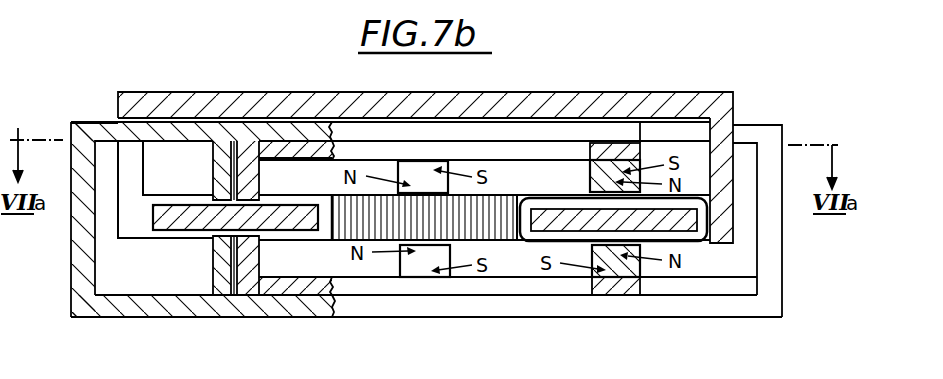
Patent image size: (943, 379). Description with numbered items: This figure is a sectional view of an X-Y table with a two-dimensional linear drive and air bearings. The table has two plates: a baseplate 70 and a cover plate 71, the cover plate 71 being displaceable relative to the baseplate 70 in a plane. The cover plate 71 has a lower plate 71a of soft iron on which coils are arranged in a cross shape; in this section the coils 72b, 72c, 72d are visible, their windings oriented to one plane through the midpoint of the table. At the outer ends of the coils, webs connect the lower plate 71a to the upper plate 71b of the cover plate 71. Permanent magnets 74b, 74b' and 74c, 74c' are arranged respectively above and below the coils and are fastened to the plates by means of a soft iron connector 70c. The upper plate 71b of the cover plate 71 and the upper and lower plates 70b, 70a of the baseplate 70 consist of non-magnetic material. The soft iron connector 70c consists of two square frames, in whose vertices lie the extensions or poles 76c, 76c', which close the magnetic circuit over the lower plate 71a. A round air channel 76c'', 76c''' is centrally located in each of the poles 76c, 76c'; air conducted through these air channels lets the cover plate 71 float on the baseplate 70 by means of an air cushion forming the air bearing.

The baseplate 70 is at (767, 250).
The lower plate of the baseplate 70a is at (750, 308).
The upper plate of the baseplate 70b is at (760, 128).
The soft iron connector 70c is at (250, 152).
The cover plate 71 is at (742, 97).
The lower plate of the cover plate 71a is at (502, 242).
The upper plate of the cover plate 71b is at (682, 105).
The coil 72b is at (692, 232).
The coil 72c is at (337, 223).
The coil 72d is at (163, 220).
The permanent magnet 74b is at (616, 126).
The permanent magnet 74b' is at (625, 304).
The permanent magnet 74c is at (422, 304).
The permanent magnet 74c' is at (454, 129).
The pole 76c is at (243, 299).
The pole 76c' is at (211, 128).
The air channel 76c'' is at (204, 170).
The air channel 76c''' is at (192, 299).